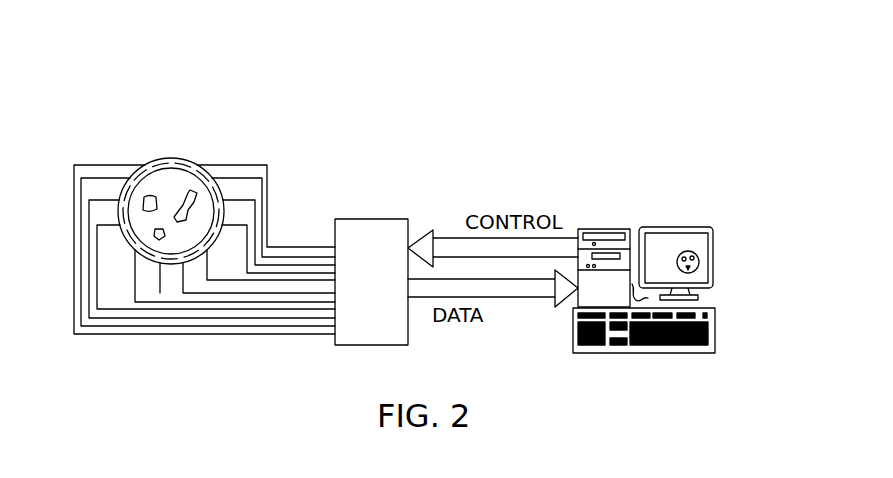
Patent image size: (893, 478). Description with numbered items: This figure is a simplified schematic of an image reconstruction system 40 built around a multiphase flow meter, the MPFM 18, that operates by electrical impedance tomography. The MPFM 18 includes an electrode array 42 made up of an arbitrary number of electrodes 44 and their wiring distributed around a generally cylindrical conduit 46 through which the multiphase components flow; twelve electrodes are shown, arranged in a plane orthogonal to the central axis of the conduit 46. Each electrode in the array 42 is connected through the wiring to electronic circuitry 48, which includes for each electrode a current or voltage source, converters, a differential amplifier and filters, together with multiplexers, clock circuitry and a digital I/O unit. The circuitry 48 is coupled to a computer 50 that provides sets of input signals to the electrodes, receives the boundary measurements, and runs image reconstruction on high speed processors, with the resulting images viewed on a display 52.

The image reconstruction system 40 is at (630, 60).
The electrode array 42 is at (225, 338).
The MPFM 18 is at (208, 168).
The electrodes 44 is at (198, 165).
The conduit 46 is at (217, 188).
The electronic circuitry 48 is at (372, 218).
The computer 50 is at (603, 228).
The display 52 is at (671, 262).